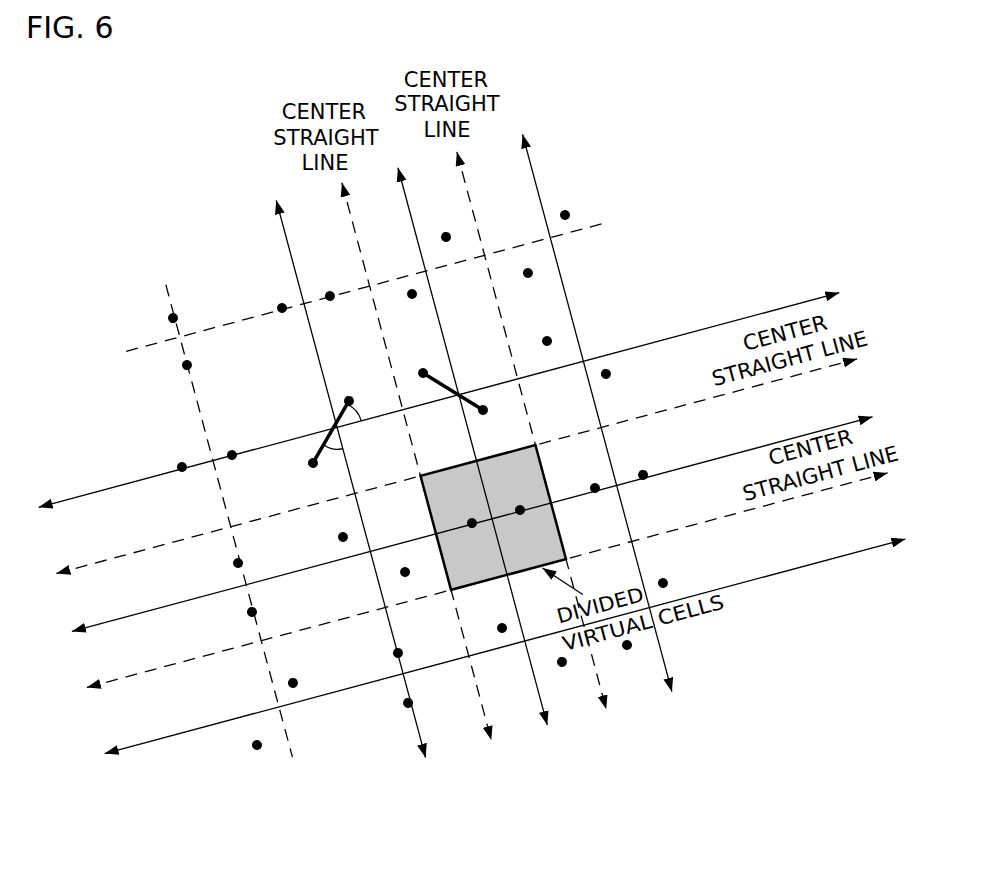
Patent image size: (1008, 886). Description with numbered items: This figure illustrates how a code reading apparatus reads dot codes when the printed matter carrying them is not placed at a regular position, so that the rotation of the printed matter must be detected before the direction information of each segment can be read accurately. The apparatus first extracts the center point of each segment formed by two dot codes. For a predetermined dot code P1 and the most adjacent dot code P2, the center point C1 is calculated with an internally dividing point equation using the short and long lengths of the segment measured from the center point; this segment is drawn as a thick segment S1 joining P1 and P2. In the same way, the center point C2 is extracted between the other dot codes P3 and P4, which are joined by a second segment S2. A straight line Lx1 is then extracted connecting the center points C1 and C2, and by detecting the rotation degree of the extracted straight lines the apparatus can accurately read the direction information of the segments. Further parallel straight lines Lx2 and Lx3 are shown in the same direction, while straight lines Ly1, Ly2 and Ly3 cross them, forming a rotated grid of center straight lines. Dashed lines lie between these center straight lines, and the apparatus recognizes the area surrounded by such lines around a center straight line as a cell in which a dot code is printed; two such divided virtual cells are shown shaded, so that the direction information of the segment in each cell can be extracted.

The straight line Lx1 is at (434, 384).
The second center straight line in x direction Lx2 is at (468, 509).
The third center straight line in x direction Lx3 is at (501, 631).
The first center straight line in y direction Ly1 is at (327, 485).
The second center straight line in y direction Ly2 is at (449, 453).
The third center straight line in y direction Ly3 is at (574, 419).
The center point C1 is at (311, 413).
The center point C2 is at (457, 371).
The first segment connecting measured points S1 is at (322, 434).
The second segment connecting measured points S2 is at (445, 394).
The dot code P1 is at (360, 387).
The dot code P2 is at (305, 478).
The dot code P3 is at (423, 359).
The dot code P4 is at (496, 422).